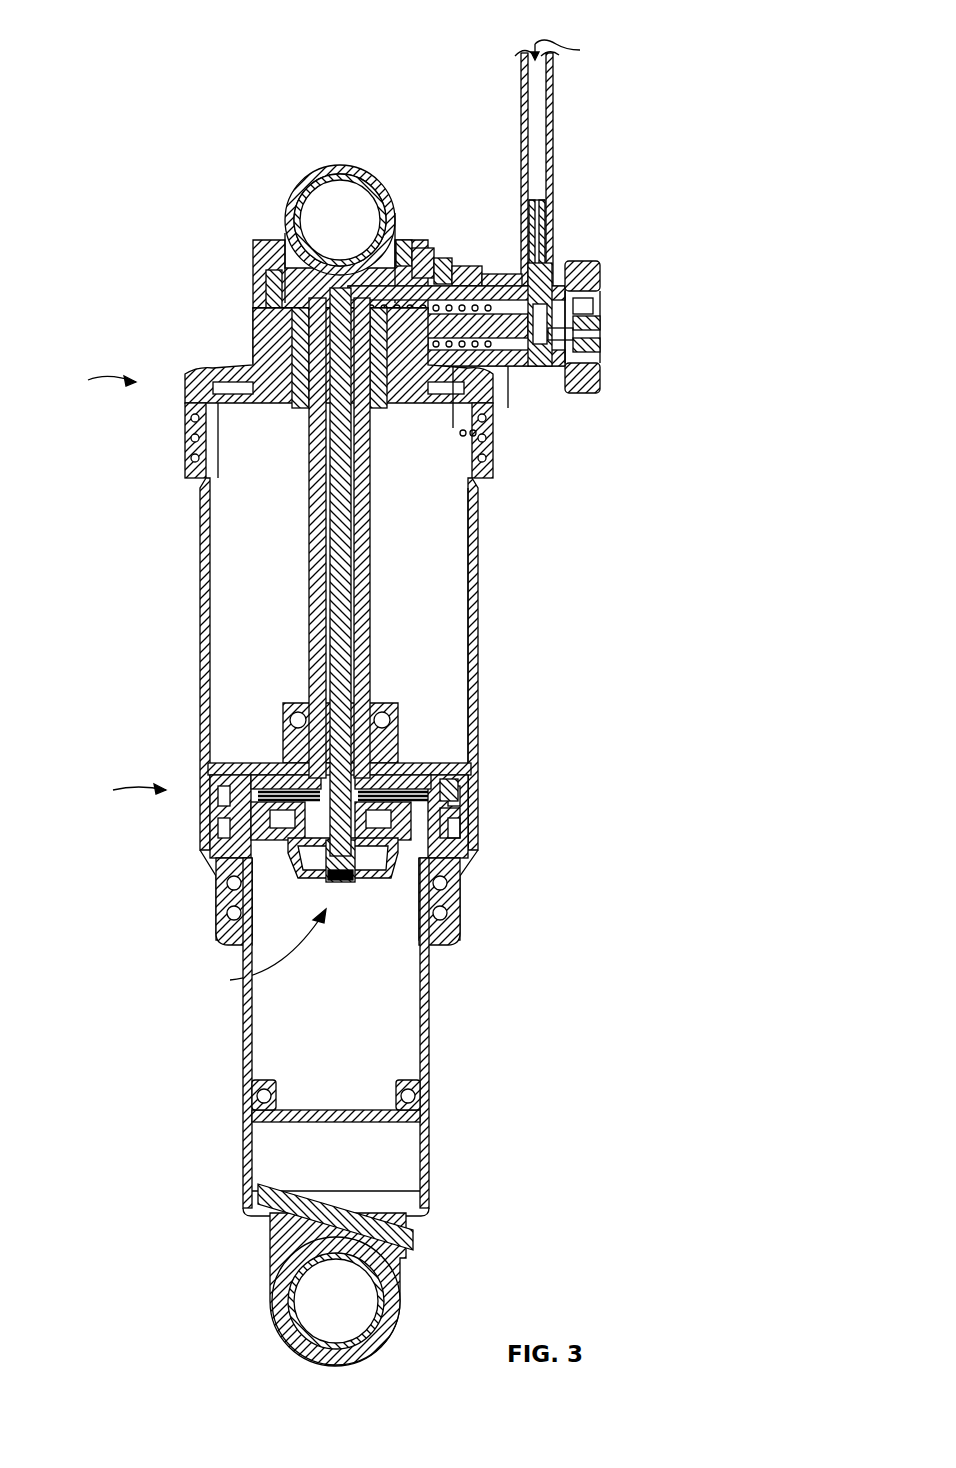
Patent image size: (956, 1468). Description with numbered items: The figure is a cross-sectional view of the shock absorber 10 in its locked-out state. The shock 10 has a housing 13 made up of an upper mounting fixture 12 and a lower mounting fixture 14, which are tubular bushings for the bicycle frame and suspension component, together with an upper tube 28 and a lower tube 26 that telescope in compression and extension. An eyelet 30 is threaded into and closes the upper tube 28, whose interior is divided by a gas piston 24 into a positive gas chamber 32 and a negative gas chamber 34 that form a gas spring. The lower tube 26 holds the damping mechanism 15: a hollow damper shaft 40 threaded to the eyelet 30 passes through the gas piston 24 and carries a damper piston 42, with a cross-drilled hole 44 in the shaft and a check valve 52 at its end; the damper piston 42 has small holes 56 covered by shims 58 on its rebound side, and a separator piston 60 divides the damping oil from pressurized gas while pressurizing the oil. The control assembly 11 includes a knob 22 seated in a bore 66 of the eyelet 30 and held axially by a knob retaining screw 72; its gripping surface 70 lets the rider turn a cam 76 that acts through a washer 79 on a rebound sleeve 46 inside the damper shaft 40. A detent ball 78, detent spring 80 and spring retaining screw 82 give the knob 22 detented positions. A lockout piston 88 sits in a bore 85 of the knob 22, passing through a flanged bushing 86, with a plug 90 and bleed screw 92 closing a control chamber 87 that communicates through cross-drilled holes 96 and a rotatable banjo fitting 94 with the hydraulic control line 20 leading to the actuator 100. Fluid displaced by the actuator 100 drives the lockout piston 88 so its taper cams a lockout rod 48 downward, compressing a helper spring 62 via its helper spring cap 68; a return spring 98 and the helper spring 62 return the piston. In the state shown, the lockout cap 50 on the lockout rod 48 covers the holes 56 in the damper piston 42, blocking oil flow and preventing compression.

The shock absorber 10 is at (118, 780).
The control assembly 11 is at (655, 292).
The upper mounting fixture 12 is at (336, 188).
The housing 13 is at (90, 372).
The lower mounting fixture 14 is at (372, 1310).
The damping mechanism 15 is at (255, 948).
The hydraulic control line 20 is at (545, 98).
The knob 22 is at (575, 253).
The gas piston 24 is at (232, 757).
The lower tube 26 is at (235, 1070).
The upper tube 28 is at (192, 548).
The eyelet 30 is at (222, 362).
The positive gas chamber 32 is at (458, 630).
The negative gas chamber 34 is at (452, 820).
The damper shaft 40 is at (300, 545).
The damper piston 42 is at (440, 868).
The cross-drilled hole 44 is at (301, 688).
The rebound sleeve 46 is at (182, 408).
The lockout rod 48 is at (252, 340).
The lockout cap 50 is at (215, 870).
The check valve 52 is at (345, 885).
The small holes 56 is at (445, 790).
The shims 58 is at (395, 748).
The separator piston 60 is at (343, 1100).
The helper spring 62 is at (250, 288).
The bore 66 is at (285, 208).
The helper spring cap 68 is at (265, 262).
The gripping surface 70 is at (578, 385).
The knob retaining screw 72 is at (458, 268).
The cam 76 is at (306, 255).
The detent ball 78 is at (396, 232).
The washer 79 is at (284, 345).
The detent spring 80 is at (432, 262).
The spring retaining screw 82 is at (412, 240).
The bore 85 is at (490, 276).
The flanged bushing 86 is at (332, 257).
The control chamber 87 is at (565, 345).
The lockout piston 88 is at (447, 365).
The plug 90 is at (592, 290).
The bleed screw 92 is at (592, 318).
The fitting 94 is at (545, 262).
The cross-drilled holes 96 is at (505, 360).
The return spring 98 is at (462, 428).
The actuator 100 is at (572, 46).